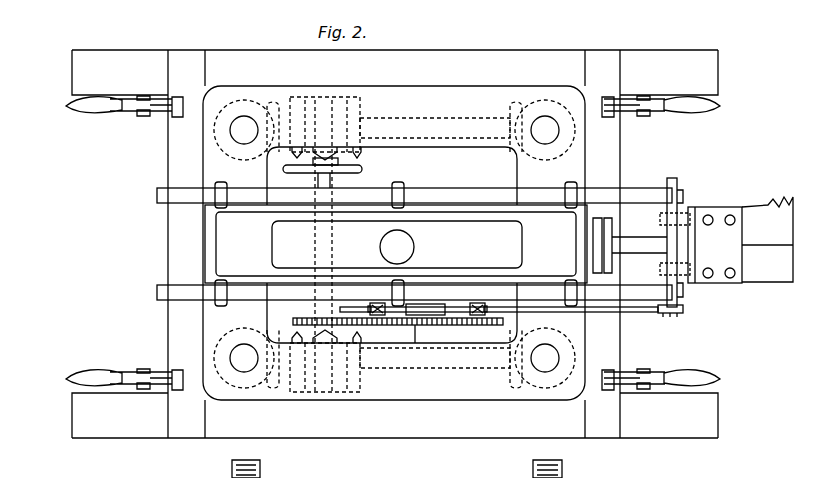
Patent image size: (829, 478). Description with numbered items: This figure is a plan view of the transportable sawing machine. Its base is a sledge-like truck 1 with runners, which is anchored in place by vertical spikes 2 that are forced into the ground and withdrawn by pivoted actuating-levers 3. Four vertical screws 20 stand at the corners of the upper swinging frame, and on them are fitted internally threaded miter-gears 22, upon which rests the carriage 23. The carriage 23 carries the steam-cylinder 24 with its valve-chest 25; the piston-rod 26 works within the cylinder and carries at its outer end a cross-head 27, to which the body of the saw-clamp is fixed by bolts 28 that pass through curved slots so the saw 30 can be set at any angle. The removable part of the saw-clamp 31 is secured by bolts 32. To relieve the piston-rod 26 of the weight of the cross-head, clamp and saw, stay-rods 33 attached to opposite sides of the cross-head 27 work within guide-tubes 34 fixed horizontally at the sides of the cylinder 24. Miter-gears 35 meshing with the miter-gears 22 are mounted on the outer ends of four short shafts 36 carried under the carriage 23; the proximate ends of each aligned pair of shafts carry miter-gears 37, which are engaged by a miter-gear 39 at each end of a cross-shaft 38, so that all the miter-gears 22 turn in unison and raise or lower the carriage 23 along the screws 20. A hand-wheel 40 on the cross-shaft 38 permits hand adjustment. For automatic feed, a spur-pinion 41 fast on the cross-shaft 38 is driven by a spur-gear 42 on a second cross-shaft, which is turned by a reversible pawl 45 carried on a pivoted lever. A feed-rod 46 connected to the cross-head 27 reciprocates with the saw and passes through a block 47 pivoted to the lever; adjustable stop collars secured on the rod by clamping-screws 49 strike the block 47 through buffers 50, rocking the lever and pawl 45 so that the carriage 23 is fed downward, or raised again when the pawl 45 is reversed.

The truck 1 is at (105, 48).
The spikes 2 is at (143, 97).
The actuating-levers 3 is at (66, 106).
The screws 20 is at (394, 244).
The miter-gears 22 is at (215, 130).
The carriage 23 is at (420, 343).
The steam-cylinder 24 is at (230, 250).
The valve-chest 25 is at (290, 226).
The piston-rod 26 is at (640, 237).
The cross-head 27 is at (700, 213).
The bolts 28 is at (678, 218).
The saw 30 is at (760, 205).
The removable part of the saw-clamp 31 is at (735, 270).
The bolts 32 is at (735, 222).
The stay-rods 33 is at (668, 192).
The guide-tubes 34 is at (165, 195).
The miter-gears 35 is at (272, 105).
The short shafts 36 is at (285, 125).
The miter-gears 37 is at (300, 115).
The cross-shaft 38 is at (325, 178).
The miter-gears 39 is at (335, 103).
The hand-wheel 40 is at (345, 170).
The spur-pinion 41 is at (303, 305).
The spur-gear 42 is at (470, 326).
The pawl 45 is at (415, 325).
The feed-rod 46 is at (680, 313).
The block 47 is at (420, 304).
The clamping-screws 49 is at (375, 303).
The buffers 50 is at (376, 303).